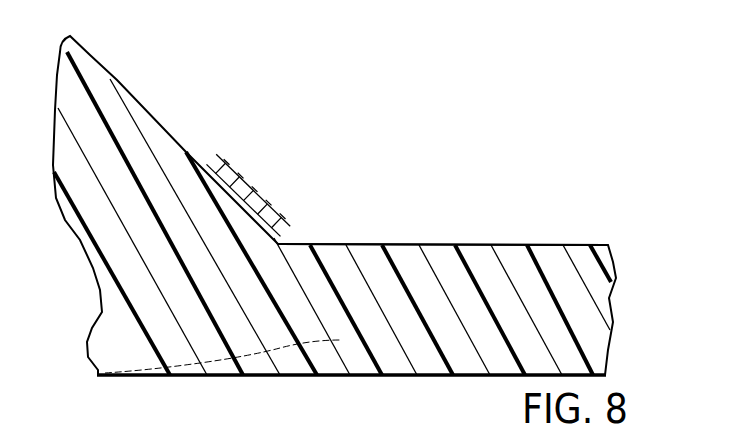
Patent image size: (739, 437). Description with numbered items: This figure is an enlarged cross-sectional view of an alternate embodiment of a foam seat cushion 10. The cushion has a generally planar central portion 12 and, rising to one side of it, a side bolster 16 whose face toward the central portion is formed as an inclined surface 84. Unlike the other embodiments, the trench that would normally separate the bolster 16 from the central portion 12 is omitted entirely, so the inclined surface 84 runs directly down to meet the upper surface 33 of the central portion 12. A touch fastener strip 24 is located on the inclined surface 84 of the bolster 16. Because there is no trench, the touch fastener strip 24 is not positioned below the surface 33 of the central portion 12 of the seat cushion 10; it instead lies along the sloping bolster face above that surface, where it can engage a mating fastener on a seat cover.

The seat cushion 10 is at (318, 191).
The central portion 12 is at (470, 260).
The side bolster 16 is at (97, 80).
The touch fastener strip 24 is at (237, 206).
The surface 33 is at (337, 243).
The inclined surface 84 is at (155, 118).